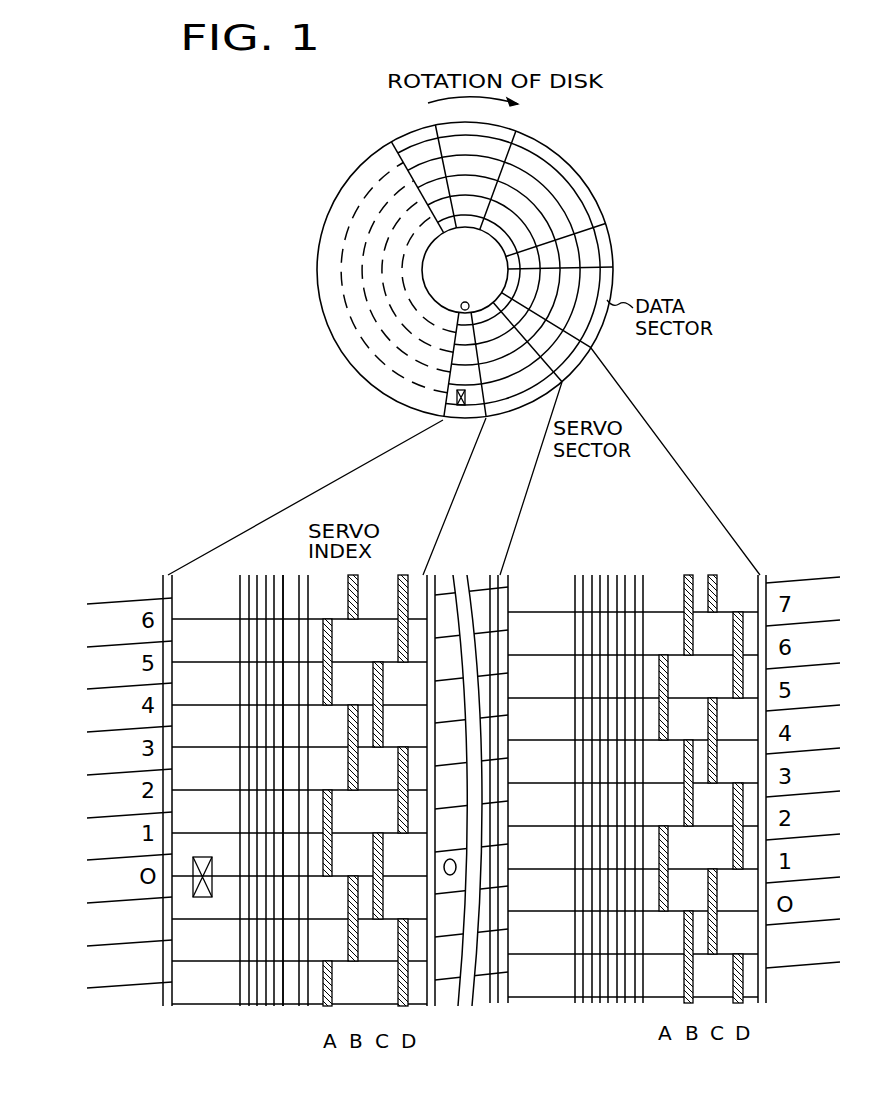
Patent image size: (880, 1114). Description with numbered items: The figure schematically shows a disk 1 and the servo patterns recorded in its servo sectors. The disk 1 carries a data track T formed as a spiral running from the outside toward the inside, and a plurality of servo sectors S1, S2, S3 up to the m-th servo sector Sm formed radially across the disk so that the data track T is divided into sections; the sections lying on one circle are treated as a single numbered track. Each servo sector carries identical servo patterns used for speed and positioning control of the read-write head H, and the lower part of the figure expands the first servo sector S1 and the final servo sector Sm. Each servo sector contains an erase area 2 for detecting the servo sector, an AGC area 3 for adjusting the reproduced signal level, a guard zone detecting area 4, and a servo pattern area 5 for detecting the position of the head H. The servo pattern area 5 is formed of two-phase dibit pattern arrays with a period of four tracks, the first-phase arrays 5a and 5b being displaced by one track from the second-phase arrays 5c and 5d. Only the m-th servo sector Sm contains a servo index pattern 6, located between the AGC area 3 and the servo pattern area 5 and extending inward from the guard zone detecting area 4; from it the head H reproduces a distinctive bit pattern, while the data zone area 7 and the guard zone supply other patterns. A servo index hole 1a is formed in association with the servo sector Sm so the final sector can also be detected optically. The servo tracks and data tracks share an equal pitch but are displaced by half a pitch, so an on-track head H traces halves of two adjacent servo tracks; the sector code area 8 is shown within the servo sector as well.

The disk 1 is at (485, 283).
The servo index hole 1a is at (468, 303).
The erase area 2 is at (240, 1010).
The AGC area 3 is at (267, 1010).
The guard zone detecting area 4 is at (305, 1010).
The servo pattern area 5 is at (700, 799).
The first-phase pattern array 5a is at (662, 607).
The first-phase pattern array 5b is at (689, 571).
The second-phase pattern array 5c is at (712, 575).
The second-phase pattern array 5d is at (738, 608).
The servo index pattern 6 is at (287, 578).
The data zone area 7 is at (640, 568).
The sector code 8 is at (638, 963).
The read-write head H is at (461, 406).
The data track T is at (592, 193).
The first servo sector S1 is at (572, 363).
The servo sector S2 is at (610, 243).
The servo sector S3 is at (527, 140).
The m-th servo sector Sm is at (472, 413).